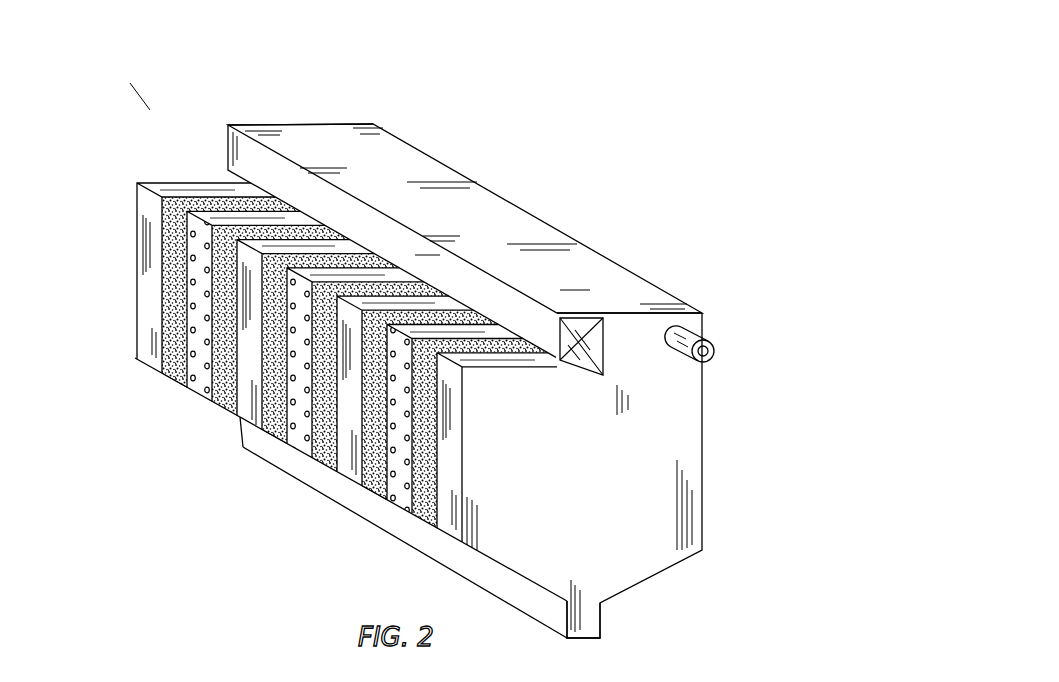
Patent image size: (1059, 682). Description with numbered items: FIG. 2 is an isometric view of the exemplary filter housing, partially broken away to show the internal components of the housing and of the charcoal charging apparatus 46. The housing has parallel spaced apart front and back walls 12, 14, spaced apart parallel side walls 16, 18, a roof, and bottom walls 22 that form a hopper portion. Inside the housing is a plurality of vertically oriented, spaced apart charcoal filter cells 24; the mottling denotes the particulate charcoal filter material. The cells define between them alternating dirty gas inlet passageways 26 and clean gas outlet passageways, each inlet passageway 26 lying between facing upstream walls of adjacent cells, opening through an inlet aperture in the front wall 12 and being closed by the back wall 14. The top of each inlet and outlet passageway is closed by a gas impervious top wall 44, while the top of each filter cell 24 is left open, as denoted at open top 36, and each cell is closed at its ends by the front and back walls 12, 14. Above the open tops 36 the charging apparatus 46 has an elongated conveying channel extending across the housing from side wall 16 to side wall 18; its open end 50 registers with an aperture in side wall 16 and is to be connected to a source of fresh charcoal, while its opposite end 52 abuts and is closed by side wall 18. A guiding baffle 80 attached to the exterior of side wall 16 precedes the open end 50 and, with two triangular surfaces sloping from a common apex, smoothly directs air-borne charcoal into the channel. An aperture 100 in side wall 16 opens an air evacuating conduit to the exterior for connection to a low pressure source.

The front wall 12 is at (147, 273).
The back wall 14 is at (712, 430).
The side wall 16 is at (648, 463).
The side wall 18 is at (168, 128).
The bottom walls 22 is at (630, 590).
The charcoal filter cell 24 is at (173, 257).
The dirty gas inlet passageway 26 is at (200, 297).
The open top 36 is at (238, 205).
The top wall 44 is at (210, 198).
The charging apparatus 46 is at (595, 282).
The open end 50 is at (603, 316).
The opposite end 52 is at (255, 124).
The guiding baffle 80 is at (590, 367).
The aperture 100 is at (706, 341).